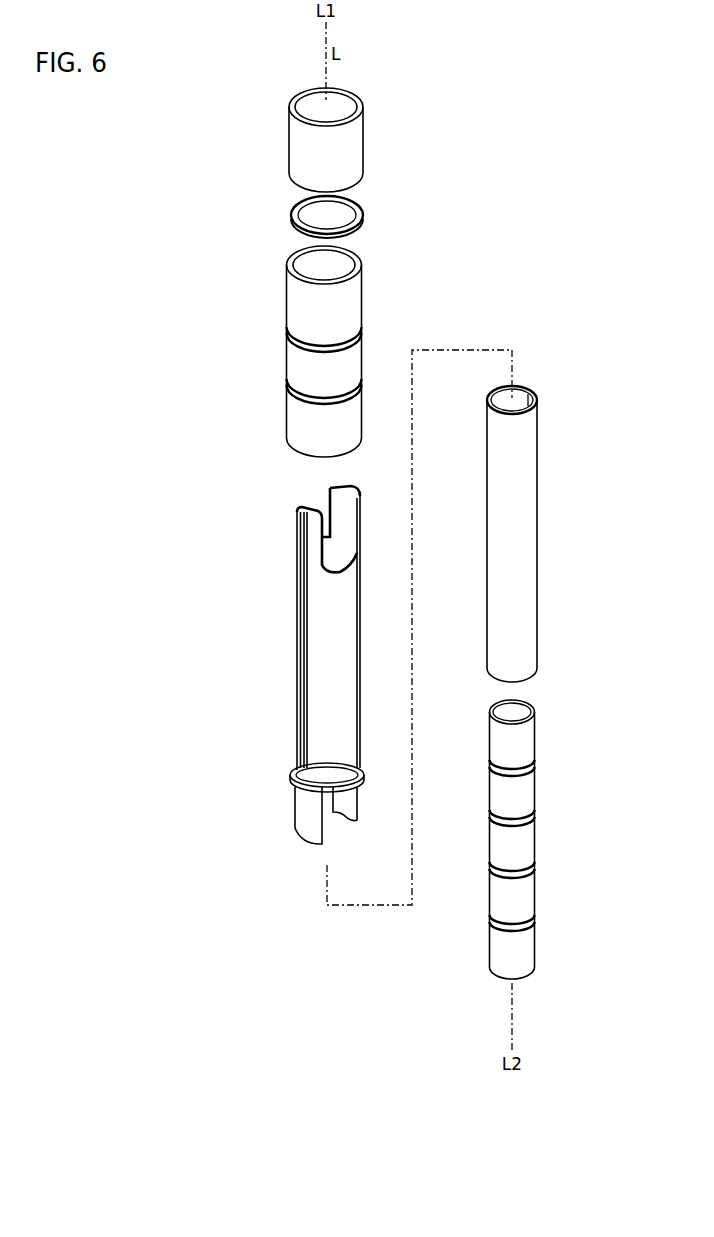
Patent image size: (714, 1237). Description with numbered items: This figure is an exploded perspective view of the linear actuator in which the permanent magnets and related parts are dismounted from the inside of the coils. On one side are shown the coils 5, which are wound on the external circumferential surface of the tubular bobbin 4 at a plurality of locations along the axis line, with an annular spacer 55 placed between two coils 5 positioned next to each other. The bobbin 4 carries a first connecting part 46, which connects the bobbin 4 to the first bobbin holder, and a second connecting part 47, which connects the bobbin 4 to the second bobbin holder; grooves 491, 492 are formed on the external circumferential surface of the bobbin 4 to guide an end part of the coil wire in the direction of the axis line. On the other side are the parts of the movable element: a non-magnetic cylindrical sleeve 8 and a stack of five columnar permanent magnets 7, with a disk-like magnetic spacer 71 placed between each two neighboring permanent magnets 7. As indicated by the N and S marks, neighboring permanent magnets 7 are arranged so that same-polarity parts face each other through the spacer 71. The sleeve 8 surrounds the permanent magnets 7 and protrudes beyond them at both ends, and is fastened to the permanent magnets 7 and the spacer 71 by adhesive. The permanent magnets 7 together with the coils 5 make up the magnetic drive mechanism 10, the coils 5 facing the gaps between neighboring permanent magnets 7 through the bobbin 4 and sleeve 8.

The bobbin 4 is at (293, 672).
The coils 5 is at (293, 148).
The permanent magnets 7 is at (530, 745).
The sleeve 8 is at (523, 490).
The magnetic drive mechanism 10 is at (413, 533).
The first connecting part 46 is at (336, 495).
The second connecting part 47 is at (308, 823).
The spacer 55 is at (291, 218).
The spacer 71 is at (490, 762).
The groove 491 is at (297, 660).
The groove 492 is at (303, 690).